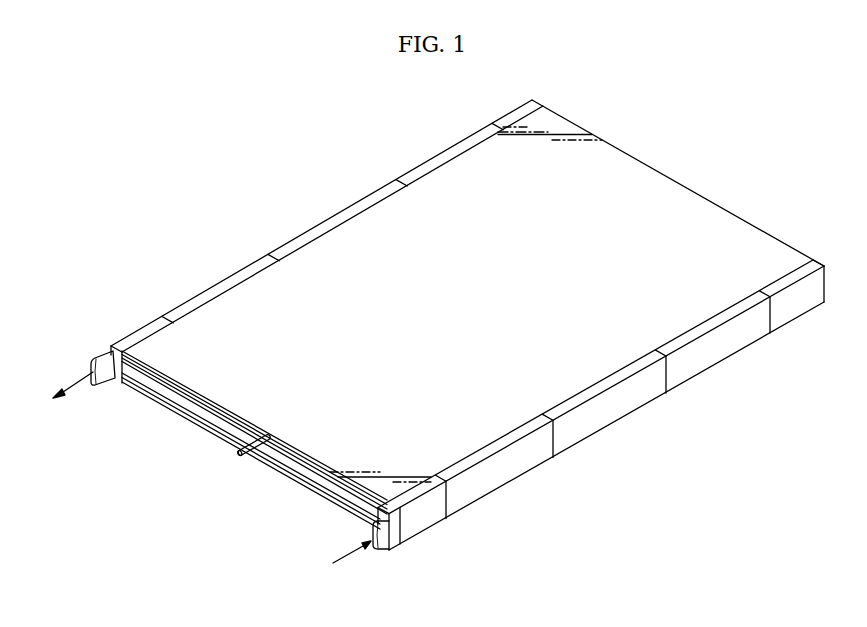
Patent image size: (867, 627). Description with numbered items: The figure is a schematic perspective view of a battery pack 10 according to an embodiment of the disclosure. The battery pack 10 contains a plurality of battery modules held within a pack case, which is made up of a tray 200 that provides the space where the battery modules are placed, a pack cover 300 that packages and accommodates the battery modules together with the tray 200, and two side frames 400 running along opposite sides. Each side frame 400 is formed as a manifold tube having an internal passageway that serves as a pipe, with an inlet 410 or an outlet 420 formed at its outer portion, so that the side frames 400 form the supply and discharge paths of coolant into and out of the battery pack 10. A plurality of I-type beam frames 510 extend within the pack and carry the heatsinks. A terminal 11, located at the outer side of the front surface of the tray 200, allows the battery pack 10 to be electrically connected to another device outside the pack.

The battery pack 10 is at (212, 119).
The terminal 11 is at (241, 453).
The tray 200 is at (310, 496).
The pack cover 300 is at (698, 206).
The side frame 400 is at (246, 268).
The inlet 410 is at (376, 549).
The outlet 420 is at (89, 371).
The I-type beam frame 510 is at (183, 402).